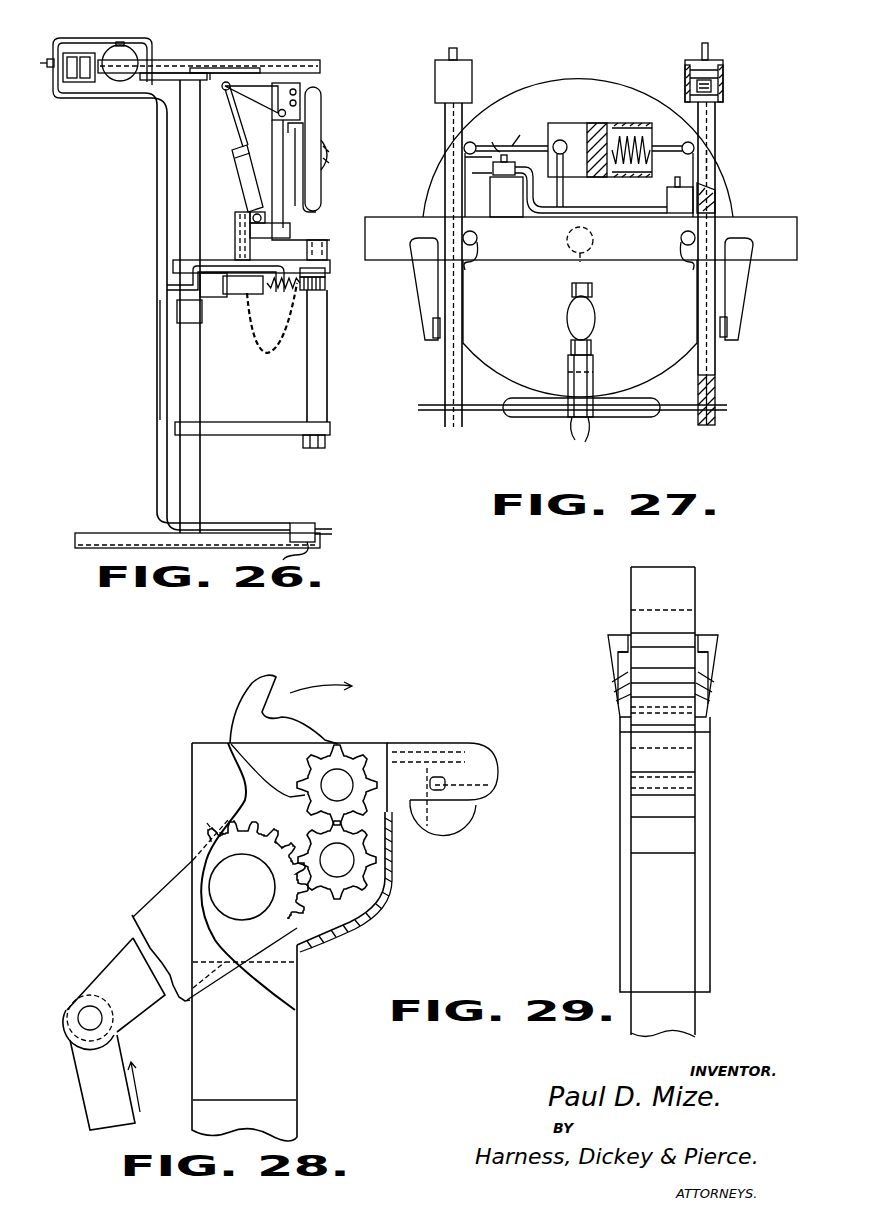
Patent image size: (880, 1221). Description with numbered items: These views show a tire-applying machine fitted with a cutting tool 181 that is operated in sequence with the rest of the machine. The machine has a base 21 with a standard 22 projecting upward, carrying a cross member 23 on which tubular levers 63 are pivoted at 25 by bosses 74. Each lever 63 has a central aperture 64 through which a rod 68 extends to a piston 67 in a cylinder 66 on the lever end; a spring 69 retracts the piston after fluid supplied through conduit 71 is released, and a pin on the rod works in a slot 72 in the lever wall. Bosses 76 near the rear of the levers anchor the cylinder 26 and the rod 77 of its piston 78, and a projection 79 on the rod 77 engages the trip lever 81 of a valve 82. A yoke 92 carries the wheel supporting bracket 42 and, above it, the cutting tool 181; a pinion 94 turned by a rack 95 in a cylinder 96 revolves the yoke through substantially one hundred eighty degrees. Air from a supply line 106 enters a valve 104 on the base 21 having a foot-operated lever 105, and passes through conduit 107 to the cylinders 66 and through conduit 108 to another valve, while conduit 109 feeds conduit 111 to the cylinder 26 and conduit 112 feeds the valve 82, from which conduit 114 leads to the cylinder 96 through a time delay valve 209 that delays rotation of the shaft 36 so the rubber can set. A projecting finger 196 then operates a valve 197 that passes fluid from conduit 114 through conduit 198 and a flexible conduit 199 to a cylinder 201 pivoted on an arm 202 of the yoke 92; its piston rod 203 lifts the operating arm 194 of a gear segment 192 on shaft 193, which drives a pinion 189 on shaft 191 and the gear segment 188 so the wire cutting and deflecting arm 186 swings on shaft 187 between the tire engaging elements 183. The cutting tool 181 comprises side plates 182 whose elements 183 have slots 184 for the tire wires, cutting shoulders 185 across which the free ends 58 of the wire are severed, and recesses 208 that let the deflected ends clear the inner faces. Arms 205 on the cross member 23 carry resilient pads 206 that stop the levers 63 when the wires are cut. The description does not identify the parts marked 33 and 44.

In FIG. 26, the base 21 is at (98, 535).
In FIG. 27, the base 21 is at (590, 80).
In FIG. 26, the standard 22 is at (183, 380).
In FIG. 27, the standard 22 is at (577, 262).
In FIG. 27, the cross member 23 is at (388, 225).
In FIG. 27, the pivot 25 is at (579, 261).
In FIG. 26, the cylinder 26 is at (135, 52).
In FIG. 27, the cylinder 26 is at (628, 125).
In FIG. 26, the cross bar 33 is at (252, 432).
In FIG. 26, the shaft 36 is at (325, 363).
In FIG. 26, the bracket 42 is at (290, 150).
In FIG. 26, the lever / slot bar 44 is at (313, 105).
In FIG. 27, the lever / slot bar 44 is at (543, 415).
In FIG. 27, the free ends of the wire 58 is at (490, 412).
In FIG. 26, the levers 63 is at (228, 62).
In FIG. 27, the levers 63 is at (445, 148).
In FIG. 27, the central aperture 64 is at (715, 158).
In FIG. 26, the cylinders 66 is at (78, 82).
In FIG. 27, the cylinders 66 is at (465, 80).
In FIG. 27, the piston 67 is at (724, 70).
In FIG. 27, the rod 68 is at (718, 395).
In FIG. 27, the spring 69 is at (712, 84).
In FIG. 26, the conduit 71 is at (39, 59).
In FIG. 27, the conduit 71 is at (458, 52).
In FIG. 27, the slot 72 is at (717, 195).
In FIG. 27, the bosses 74 is at (478, 240).
In FIG. 27, the bosses 76 is at (476, 143).
In FIG. 27, the rod 77 is at (518, 132).
In FIG. 27, the piston 78 is at (597, 125).
In FIG. 27, the projection 79 is at (494, 140).
In FIG. 27, the trip lever 81 is at (516, 166).
In FIG. 27, the valve 82 is at (506, 197).
In FIG. 26, the yoke 92 is at (285, 212).
In FIG. 29, the yoke 92 is at (690, 1013).
In FIG. 26, the pinion 94 is at (320, 290).
In FIG. 26, the rack 95 is at (283, 292).
In FIG. 26, the cylinder 96 is at (200, 312).
In FIG. 26, the valve 104 is at (305, 530).
In FIG. 26, the foot-operated lever 105 is at (330, 530).
In FIG. 26, the supply line 106 is at (310, 548).
In FIG. 26, the conduit 107 is at (160, 428).
In FIG. 26, the conduit 108 is at (70, 38).
In FIG. 27, the conduit 109 is at (614, 213).
In FIG. 27, the conduit 111 is at (566, 185).
In FIG. 27, the conduit 112 is at (534, 207).
In FIG. 26, the conduit 114 is at (170, 215).
In FIG. 27, the conduit 114 is at (465, 165).
In FIG. 26, the cutting tool 181 is at (280, 102).
In FIG. 28, the cutting tool 181 is at (306, 984).
In FIG. 29, the cutting tool 181 is at (720, 929).
In FIG. 29, the side plates 182 is at (620, 870).
In FIG. 27, the tire engaging elements 183 is at (588, 432).
In FIG. 29, the tire engaging elements 183 is at (612, 670).
In FIG. 28, the slots 184 is at (465, 815).
In FIG. 29, the cutting shoulder 185 is at (622, 640).
In FIG. 27, the wire cutting and deflecting arm 186 is at (585, 390).
In FIG. 28, the wire cutting and deflecting arm 186 is at (245, 710).
In FIG. 29, the wire cutting and deflecting arm 186 is at (690, 575).
In FIG. 28, the shaft 187 is at (340, 775).
In FIG. 28, the gear segment 188 is at (358, 765).
In FIG. 28, the pinion 189 is at (360, 870).
In FIG. 28, the shaft 191 is at (350, 878).
In FIG. 28, the gear segment 192 is at (345, 913).
In FIG. 28, the shaft 193 is at (230, 868).
In FIG. 26, the operating arm 194 is at (258, 93).
In FIG. 27, the operating arm 194 is at (585, 312).
In FIG. 28, the operating arm 194 is at (150, 908).
In FIG. 26, the projecting finger 196 is at (228, 294).
In FIG. 26, the valve 197 is at (328, 272).
In FIG. 26, the conduit 198 is at (210, 258).
In FIG. 26, the flexible conduit 199 is at (267, 352).
In FIG. 26, the cylinder 201 is at (245, 178).
In FIG. 27, the cylinder 201 is at (592, 332).
In FIG. 26, the arm 202 is at (266, 236).
In FIG. 26, the piston rod 203 is at (226, 122).
In FIG. 26, the arms 205 is at (215, 62).
In FIG. 27, the arms 205 is at (420, 292).
In FIG. 27, the resilient pads 206 is at (735, 335).
In FIG. 28, the recesses 208 is at (498, 768).
In FIG. 29, the recesses 208 is at (712, 650).
In FIG. 26, the time delay valve 209 is at (195, 280).